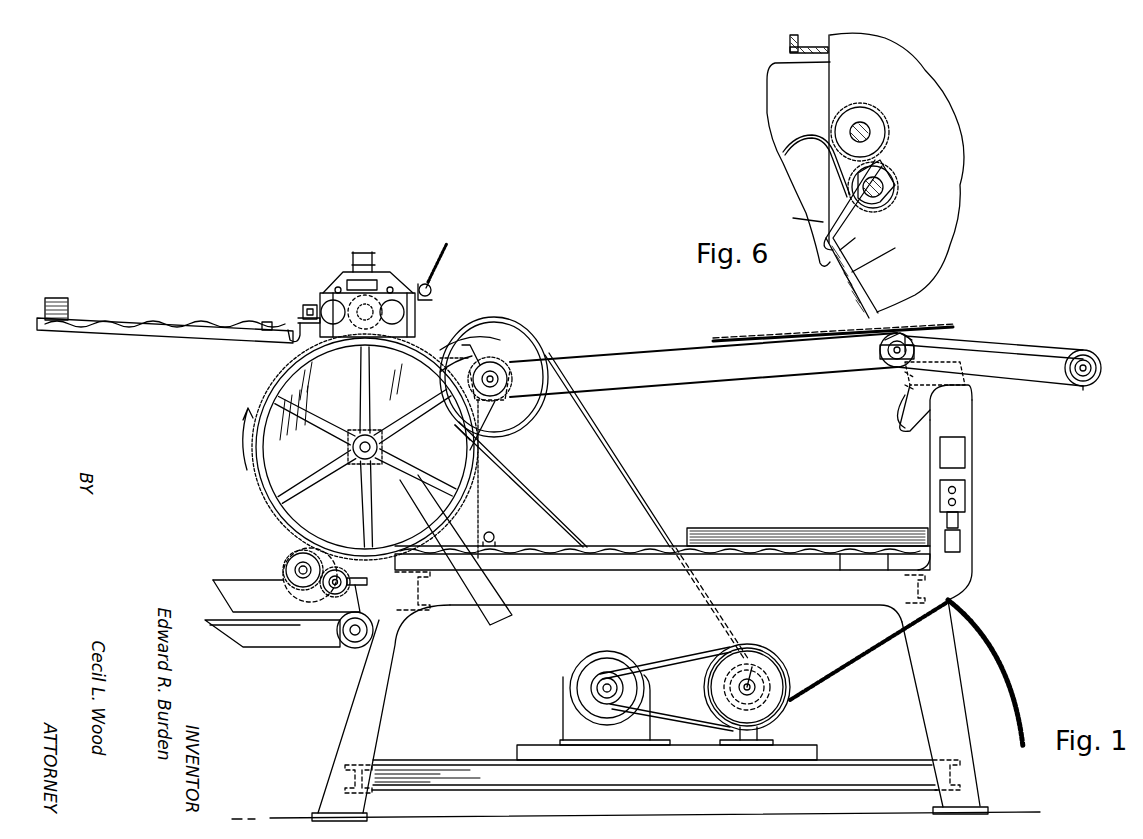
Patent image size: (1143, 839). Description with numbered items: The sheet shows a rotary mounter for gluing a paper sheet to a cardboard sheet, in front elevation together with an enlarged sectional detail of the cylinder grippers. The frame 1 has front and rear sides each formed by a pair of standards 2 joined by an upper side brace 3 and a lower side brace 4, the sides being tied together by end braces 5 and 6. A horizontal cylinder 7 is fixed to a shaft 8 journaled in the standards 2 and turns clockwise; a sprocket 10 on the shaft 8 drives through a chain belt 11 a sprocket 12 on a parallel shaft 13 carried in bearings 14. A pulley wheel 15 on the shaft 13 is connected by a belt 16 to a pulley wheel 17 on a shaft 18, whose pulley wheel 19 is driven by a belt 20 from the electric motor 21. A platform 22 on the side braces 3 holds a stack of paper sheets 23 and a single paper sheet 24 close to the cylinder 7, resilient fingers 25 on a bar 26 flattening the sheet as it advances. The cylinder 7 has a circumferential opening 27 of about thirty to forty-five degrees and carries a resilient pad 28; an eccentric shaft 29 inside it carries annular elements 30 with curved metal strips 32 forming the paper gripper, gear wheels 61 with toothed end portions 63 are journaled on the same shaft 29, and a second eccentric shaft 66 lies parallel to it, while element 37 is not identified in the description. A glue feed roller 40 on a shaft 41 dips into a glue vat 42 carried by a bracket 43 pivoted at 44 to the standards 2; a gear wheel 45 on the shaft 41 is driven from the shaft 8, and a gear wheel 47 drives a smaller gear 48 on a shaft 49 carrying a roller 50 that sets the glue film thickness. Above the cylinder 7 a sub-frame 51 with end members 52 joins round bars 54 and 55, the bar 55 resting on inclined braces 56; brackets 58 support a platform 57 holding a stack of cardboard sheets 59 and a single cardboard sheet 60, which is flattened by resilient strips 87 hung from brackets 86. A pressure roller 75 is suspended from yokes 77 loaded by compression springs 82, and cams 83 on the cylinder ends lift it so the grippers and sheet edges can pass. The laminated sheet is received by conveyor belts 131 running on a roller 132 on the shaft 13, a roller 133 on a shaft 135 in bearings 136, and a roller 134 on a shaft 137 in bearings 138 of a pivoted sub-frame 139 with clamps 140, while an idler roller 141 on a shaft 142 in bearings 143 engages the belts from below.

In FIG. 1, the frame 1 is at (993, 490).
In FIG. 1, the standards 2 is at (352, 692).
In FIG. 1, the side brace 3 is at (862, 605).
In FIG. 1, the side brace 4 is at (416, 762).
In FIG. 1, the end brace 5 is at (402, 612).
In FIG. 1, the end brace 6 is at (343, 772).
In FIG. 1, the cylinder 7 is at (282, 464).
In FIG. 6, the cylinder 7 is at (938, 92).
In FIG. 1, the shaft 8 is at (360, 436).
In FIG. 1, the sprocket 10 is at (482, 449).
In FIG. 1, the chain belt 11 is at (455, 345).
In FIG. 1, the sprocket 12 is at (470, 342).
In FIG. 1, the shaft 13 is at (493, 370).
In FIG. 1, the bearings 14 is at (508, 380).
In FIG. 1, the pulley wheel 15 is at (520, 340).
In FIG. 1, the belt 16 is at (614, 452).
In FIG. 1, the pulley wheel 17 is at (760, 675).
In FIG. 1, the shaft 18 is at (772, 658).
In FIG. 1, the pulley wheel 19 is at (783, 683).
In FIG. 1, the belt 20 is at (658, 660).
In FIG. 1, the electric motor 21 is at (570, 688).
In FIG. 1, the platform 22 is at (750, 568).
In FIG. 1, the stack of paper sheets 23 is at (776, 528).
In FIG. 1, the paper sheet 24 is at (620, 548).
In FIG. 6, the paper sheet 24 is at (840, 278).
In FIG. 1, the resilient fingers 25 is at (476, 531).
In FIG. 1, the bar 26 is at (494, 540).
In FIG. 6, the circumferential opening 27 is at (790, 50).
In FIG. 6, the resilient pad 28 is at (863, 285).
In FIG. 6, the shaft 29 is at (880, 178).
In FIG. 6, the annular elements 30 is at (895, 185).
In FIG. 6, the metal strips 32 is at (793, 218).
In FIG. 6, the gear 37 is at (858, 105).
In FIG. 1, the glue feed roller 40 is at (300, 565).
In FIG. 1, the shaft 41 is at (296, 565).
In FIG. 1, the vat 42 is at (262, 578).
In FIG. 1, the bracket 43 is at (276, 658).
In FIG. 1, the pivotal connection 44 is at (355, 640).
In FIG. 1, the gear wheel 45 is at (298, 568).
In FIG. 1, the gear wheel 47 is at (292, 598).
In FIG. 1, the gear 48 is at (328, 596).
In FIG. 1, the shaft 49 is at (362, 588).
In FIG. 1, the roller 50 is at (337, 600).
In FIG. 1, the sub-frame 51 is at (309, 289).
In FIG. 1, the end member 52 is at (432, 280).
In FIG. 1, the round bar 54 is at (421, 285).
In FIG. 1, the round bar 55 is at (345, 300).
In FIG. 1, the inclined braces 56 is at (355, 405).
In FIG. 1, the platform 57 is at (100, 335).
In FIG. 1, the brackets 58 is at (292, 340).
In FIG. 1, the stack of cardboard sheets 59 is at (60, 298).
In FIG. 1, the cardboard sheet 60 is at (110, 318).
In FIG. 6, the gear wheels 61 is at (898, 198).
In FIG. 6, the toothed end portions 63 is at (783, 142).
In FIG. 6, the shaft 66 is at (870, 125).
In FIG. 1, the pressure roller 75 is at (391, 298).
In FIG. 1, the yoke 77 is at (333, 298).
In FIG. 1, the compression springs 82 is at (352, 272).
In FIG. 6, the cams 83 is at (766, 88).
In FIG. 1, the brackets 86 is at (303, 308).
In FIG. 1, the resilient strips 87 is at (298, 320).
In FIG. 1, the conveyor belts 131 is at (602, 346).
In FIG. 1, the roller 132 is at (520, 400).
In FIG. 1, the roller 133 is at (927, 332).
In FIG. 1, the roller 134 is at (1050, 388).
In FIG. 1, the shaft 135 is at (880, 360).
In FIG. 1, the bearings 136 is at (885, 340).
In FIG. 1, the shaft 137 is at (1092, 352).
In FIG. 1, the bearings 138 is at (1100, 386).
In FIG. 1, the sub-frame 139 is at (1030, 346).
In FIG. 1, the clamp 140 is at (900, 405).
In FIG. 1, the idler roller 141 is at (935, 377).
In FIG. 1, the shaft 142 is at (903, 374).
In FIG. 1, the bearings 143 is at (903, 386).